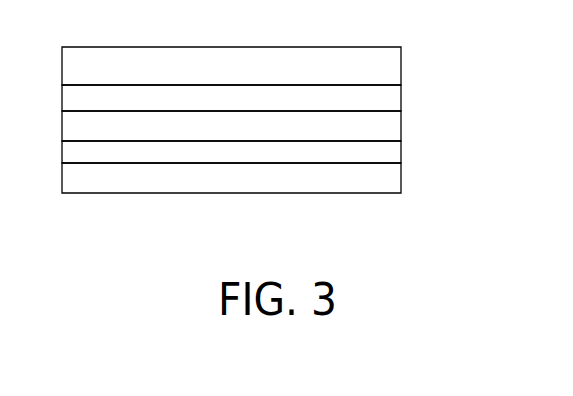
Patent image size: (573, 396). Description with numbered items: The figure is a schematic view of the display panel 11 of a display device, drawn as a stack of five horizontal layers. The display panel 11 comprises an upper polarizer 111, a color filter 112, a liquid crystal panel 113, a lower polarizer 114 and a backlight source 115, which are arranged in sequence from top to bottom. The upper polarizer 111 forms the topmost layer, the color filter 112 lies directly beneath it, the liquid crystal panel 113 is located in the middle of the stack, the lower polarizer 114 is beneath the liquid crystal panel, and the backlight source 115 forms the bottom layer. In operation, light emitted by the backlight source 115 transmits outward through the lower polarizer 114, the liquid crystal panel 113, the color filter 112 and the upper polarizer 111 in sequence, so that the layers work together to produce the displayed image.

The display panel 11 is at (289, 125).
The upper polarizer 111 is at (380, 68).
The color filter 112 is at (380, 98).
The liquid crystal panel 113 is at (380, 125).
The lower polarizer 114 is at (380, 153).
The backlight source 115 is at (264, 183).